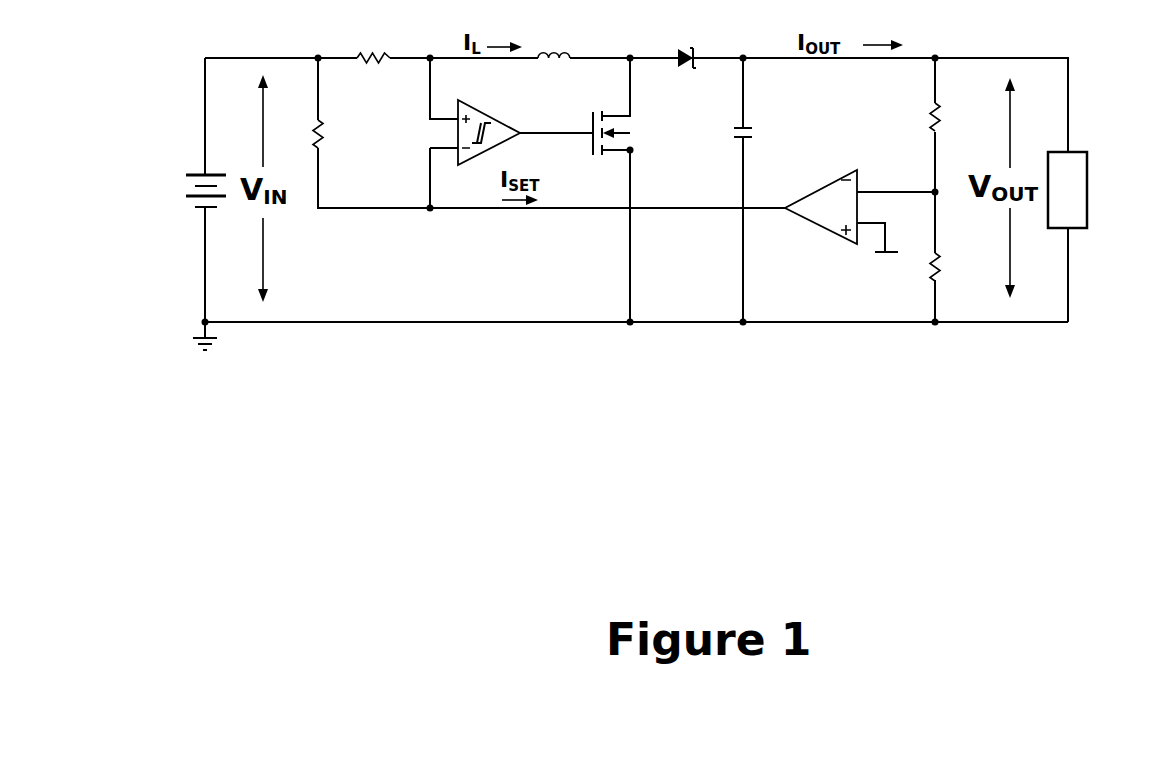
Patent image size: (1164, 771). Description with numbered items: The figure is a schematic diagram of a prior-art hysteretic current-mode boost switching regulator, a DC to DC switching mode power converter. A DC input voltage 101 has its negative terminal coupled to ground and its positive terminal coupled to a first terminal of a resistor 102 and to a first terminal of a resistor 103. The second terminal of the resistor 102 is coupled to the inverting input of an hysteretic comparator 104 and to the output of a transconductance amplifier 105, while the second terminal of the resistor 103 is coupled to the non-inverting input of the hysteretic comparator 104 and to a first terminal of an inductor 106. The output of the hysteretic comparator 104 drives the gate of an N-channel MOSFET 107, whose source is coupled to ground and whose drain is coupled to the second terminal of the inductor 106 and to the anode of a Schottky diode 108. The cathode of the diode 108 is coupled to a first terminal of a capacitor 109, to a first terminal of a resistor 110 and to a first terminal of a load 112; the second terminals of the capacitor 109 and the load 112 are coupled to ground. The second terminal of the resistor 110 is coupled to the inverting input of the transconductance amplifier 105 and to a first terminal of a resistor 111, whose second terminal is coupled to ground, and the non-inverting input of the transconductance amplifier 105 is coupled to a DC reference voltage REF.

The DC input voltage 101 is at (193, 190).
The resistor 102 is at (371, 133).
The resistor 103 is at (376, 45).
The hysteretic comparator 104 is at (511, 133).
The transconductance amplifier 105 is at (682, 223).
The inductor 106 is at (559, 39).
The N-channel MOSFET 107 is at (636, 190).
The Schottky diode 108 is at (689, 44).
The capacitor 109 is at (768, 190).
The resistor 110 is at (910, 125).
The resistor 111 is at (961, 257).
The load 112 is at (1096, 190).